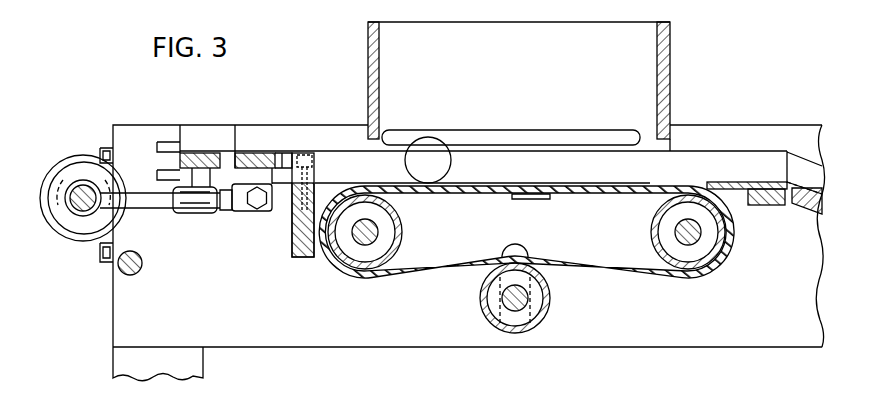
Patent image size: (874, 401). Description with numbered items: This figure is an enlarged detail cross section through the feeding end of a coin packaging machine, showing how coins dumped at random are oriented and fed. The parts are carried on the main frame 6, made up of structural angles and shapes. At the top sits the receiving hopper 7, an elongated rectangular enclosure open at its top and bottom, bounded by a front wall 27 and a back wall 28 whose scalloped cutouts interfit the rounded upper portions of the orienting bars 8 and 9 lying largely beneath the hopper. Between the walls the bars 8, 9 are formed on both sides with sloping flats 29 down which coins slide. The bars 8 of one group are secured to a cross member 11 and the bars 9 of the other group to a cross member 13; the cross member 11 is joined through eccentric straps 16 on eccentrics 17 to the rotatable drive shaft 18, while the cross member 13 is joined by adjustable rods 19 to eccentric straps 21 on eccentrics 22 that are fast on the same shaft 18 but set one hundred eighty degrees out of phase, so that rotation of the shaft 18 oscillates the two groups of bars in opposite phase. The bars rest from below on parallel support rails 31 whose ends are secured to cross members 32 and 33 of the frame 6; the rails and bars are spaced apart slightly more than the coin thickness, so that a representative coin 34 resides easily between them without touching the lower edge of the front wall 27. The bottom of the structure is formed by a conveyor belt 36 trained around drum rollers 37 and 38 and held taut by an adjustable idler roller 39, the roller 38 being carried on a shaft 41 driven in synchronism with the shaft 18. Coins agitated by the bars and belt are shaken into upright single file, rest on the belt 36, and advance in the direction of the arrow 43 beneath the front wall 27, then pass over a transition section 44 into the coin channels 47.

The main frame 6 is at (110, 337).
The receiving hopper 7 is at (519, 80).
The orienting bars 8 is at (190, 128).
The orienting bars 9 is at (322, 128).
The cross member 11 is at (205, 152).
The cross member 13 is at (257, 153).
The eccentric straps 16 is at (120, 176).
The eccentrics 17 is at (123, 184).
The drive shaft 18 is at (83, 217).
The rods 19 is at (218, 211).
The eccentric straps 21 is at (70, 205).
The eccentrics 22 is at (60, 218).
The front wall 27 is at (654, 48).
The back wall 28 is at (378, 72).
The flats 29 is at (555, 135).
The support rails 31 is at (678, 158).
The cross member 32 is at (292, 240).
The cross member 33 is at (762, 206).
The coin 34 is at (432, 140).
The conveyor belt 36 is at (455, 195).
The drum roller 37 is at (390, 237).
The drum roller 38 is at (672, 248).
The idler roller 39 is at (550, 310).
The shaft 41 is at (700, 242).
The arrow 43 is at (540, 199).
The transition section 44 is at (728, 181).
The coin channels 47 is at (792, 162).